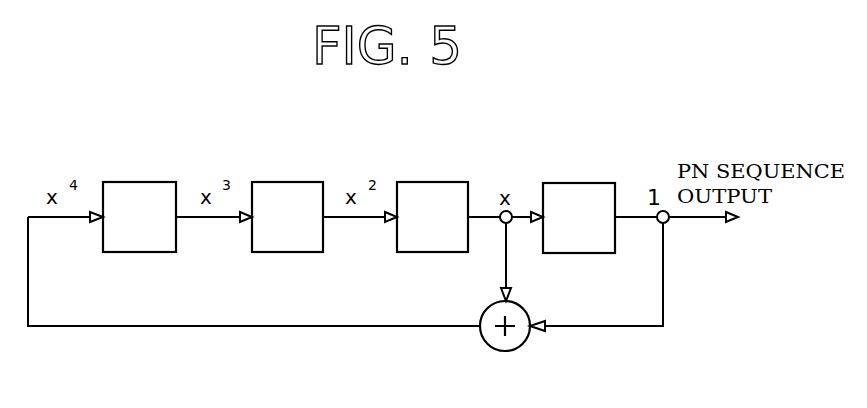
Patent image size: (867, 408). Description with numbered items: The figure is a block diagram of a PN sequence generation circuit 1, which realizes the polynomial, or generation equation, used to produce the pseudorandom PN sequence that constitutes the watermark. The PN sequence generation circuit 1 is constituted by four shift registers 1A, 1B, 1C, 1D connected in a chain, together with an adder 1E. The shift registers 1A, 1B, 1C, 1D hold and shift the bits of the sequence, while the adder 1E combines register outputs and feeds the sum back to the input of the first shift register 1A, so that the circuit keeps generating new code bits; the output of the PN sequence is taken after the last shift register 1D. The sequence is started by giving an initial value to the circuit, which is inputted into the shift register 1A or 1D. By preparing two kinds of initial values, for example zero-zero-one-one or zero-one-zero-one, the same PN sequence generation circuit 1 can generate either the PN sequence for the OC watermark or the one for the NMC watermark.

The PN sequence generation circuit 1 is at (635, 139).
The shift register 1A is at (138, 182).
The shift register 1B is at (281, 182).
The shift register 1C is at (440, 182).
The shift register 1D is at (580, 183).
The adder 1E is at (482, 335).